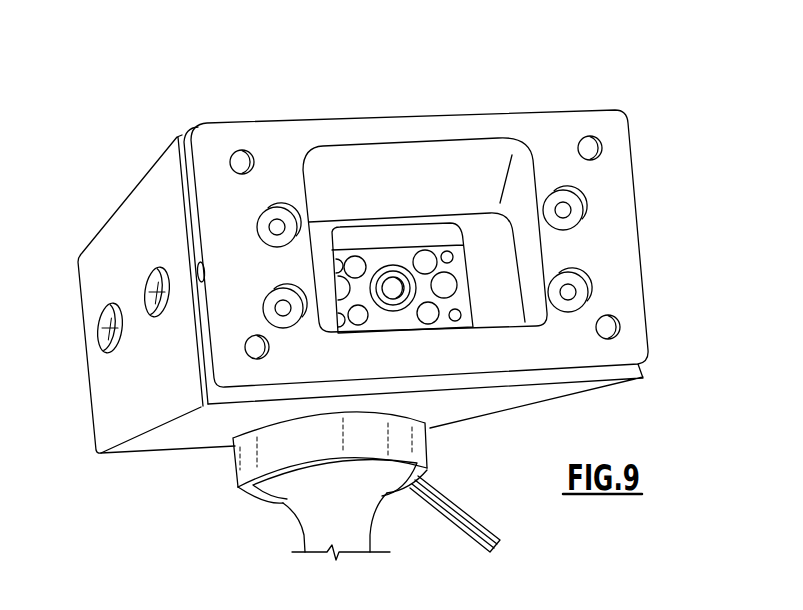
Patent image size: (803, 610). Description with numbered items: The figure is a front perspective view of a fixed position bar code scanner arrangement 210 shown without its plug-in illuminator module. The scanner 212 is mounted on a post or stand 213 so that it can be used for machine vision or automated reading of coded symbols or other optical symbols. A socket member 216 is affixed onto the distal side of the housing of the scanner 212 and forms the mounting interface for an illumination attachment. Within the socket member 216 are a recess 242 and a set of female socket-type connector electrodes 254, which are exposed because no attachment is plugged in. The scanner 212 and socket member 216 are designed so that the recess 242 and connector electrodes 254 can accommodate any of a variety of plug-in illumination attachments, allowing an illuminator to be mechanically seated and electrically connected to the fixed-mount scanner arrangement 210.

The fixed position bar code scanner arrangement 210 is at (180, 84).
The scanner 212 is at (131, 186).
The post or stand 213 is at (283, 505).
The socket member 216 is at (325, 133).
The recess 242 is at (413, 160).
The female socket-type connector electrodes 254 is at (276, 289).